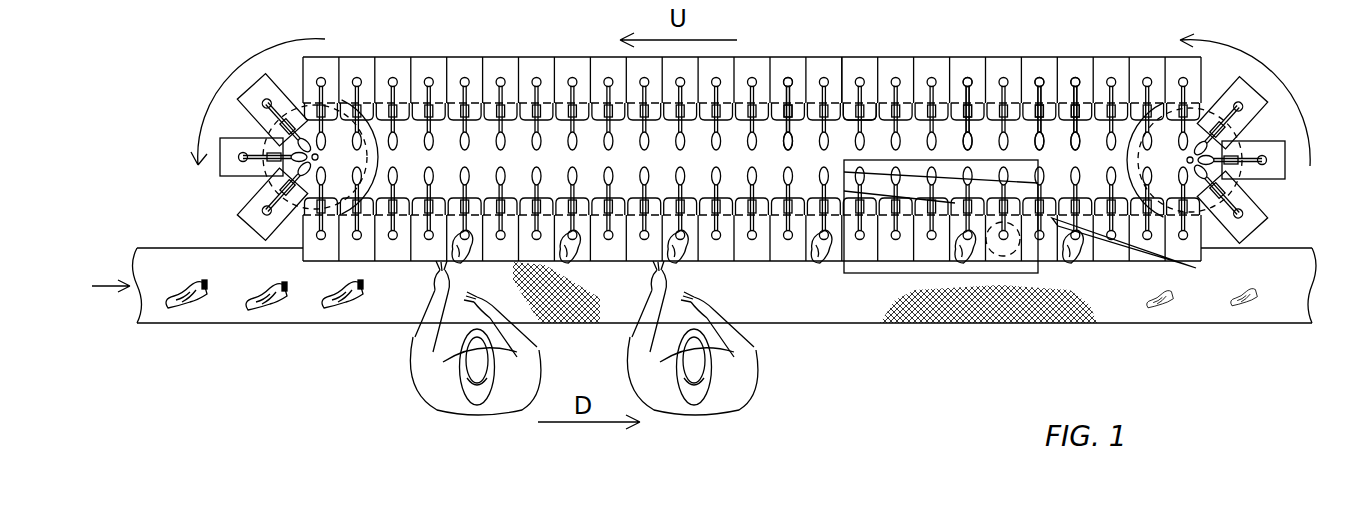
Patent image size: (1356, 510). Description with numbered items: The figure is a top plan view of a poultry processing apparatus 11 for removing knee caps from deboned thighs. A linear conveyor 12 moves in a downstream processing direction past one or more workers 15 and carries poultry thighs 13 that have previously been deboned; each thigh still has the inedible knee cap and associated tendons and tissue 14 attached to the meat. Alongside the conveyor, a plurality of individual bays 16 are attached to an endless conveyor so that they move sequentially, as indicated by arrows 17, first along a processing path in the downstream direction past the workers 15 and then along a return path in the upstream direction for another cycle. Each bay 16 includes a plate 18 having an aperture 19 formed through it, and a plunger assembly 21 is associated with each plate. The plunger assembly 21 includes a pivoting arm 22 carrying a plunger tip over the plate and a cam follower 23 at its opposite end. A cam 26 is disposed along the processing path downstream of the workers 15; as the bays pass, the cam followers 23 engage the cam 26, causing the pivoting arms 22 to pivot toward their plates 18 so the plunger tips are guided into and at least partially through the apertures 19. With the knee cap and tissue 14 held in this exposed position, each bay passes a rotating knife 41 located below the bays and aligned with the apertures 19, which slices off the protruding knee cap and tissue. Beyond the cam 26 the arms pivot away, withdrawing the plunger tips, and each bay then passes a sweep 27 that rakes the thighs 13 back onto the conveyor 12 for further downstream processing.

The apparatus 11 is at (908, 392).
The linear conveyor 12 is at (187, 248).
The poultry thighs 13 is at (170, 300).
The knee cap and associated tendons and tissue 14 is at (210, 284).
The workers 15 is at (430, 388).
The individual bays 16 is at (541, 47).
The arrows 17 is at (237, 72).
The plate 18 is at (868, 70).
The aperture 19 is at (790, 78).
The plunger assembly 21 is at (990, 93).
The pivoting arm 22 is at (1078, 92).
The cam followers 23 is at (1043, 140).
The cam 26 is at (950, 168).
The sweep 27 is at (1117, 268).
The rotating knife 41 is at (997, 258).